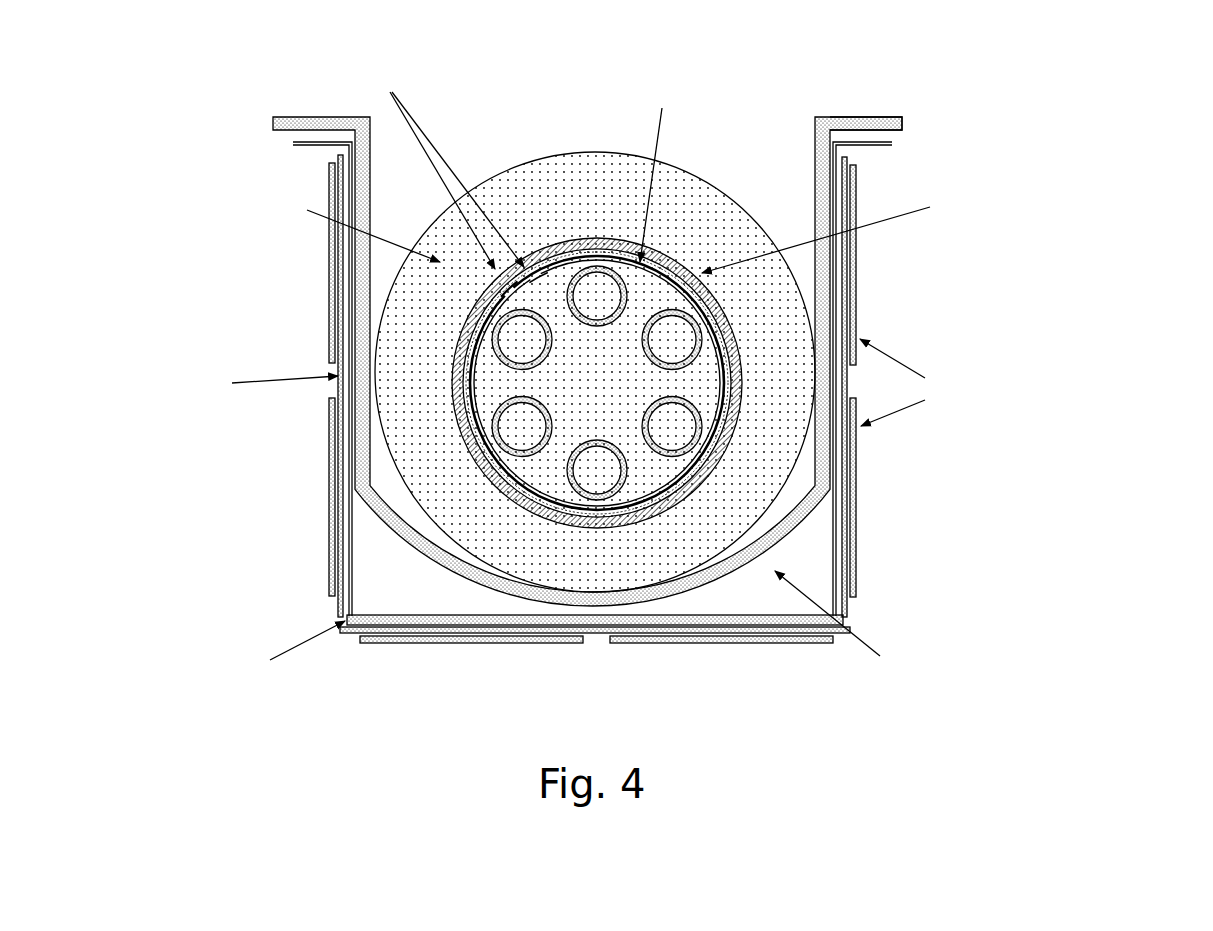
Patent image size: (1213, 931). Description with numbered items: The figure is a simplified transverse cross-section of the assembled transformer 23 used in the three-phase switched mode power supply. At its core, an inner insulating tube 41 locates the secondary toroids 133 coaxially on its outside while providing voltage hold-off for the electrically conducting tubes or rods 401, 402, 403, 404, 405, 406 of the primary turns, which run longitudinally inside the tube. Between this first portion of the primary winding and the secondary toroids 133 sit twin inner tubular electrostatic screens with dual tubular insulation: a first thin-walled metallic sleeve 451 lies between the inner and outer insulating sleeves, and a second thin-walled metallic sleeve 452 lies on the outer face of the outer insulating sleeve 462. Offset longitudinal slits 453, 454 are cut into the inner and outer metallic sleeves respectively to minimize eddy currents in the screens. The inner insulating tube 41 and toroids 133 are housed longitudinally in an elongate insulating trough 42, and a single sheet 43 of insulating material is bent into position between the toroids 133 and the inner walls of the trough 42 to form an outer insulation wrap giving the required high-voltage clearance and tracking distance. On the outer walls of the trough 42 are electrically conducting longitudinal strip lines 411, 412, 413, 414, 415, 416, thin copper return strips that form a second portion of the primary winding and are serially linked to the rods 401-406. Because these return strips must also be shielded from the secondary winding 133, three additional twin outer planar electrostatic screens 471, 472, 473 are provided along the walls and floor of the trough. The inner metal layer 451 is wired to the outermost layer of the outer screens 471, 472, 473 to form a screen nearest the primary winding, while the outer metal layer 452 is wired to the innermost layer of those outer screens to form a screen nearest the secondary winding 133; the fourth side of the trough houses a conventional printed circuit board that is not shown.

The transformer 23 is at (230, 574).
The secondary toroids 133 is at (530, 190).
The inner insulating tube 41 is at (742, 375).
The electrically conducting tube or rod 401 is at (701, 343).
The electrically conducting tube or rod 402 is at (702, 423).
The electrically conducting tube or rod 403 is at (566, 470).
The electrically conducting tube or rod 404 is at (491, 421).
The electrically conducting tube or rod 405 is at (494, 352).
The electrically conducting tube or rod 406 is at (630, 292).
The first electrostatic screen 451 is at (648, 492).
The second electrostatic screen 452 is at (633, 503).
The longitudinal slit 453 is at (536, 272).
The longitudinal slit 454 is at (507, 290).
The outer insulating sleeve 462 is at (683, 478).
The twin outer planar electrostatic screen 471 is at (830, 590).
The twin outer planar electrostatic screen 472 is at (805, 617).
The twin outer planar electrostatic screen 473 is at (355, 582).
The longitudinal strip line 411 is at (856, 283).
The longitudinal strip line 412 is at (856, 500).
The longitudinal strip line 413 is at (730, 645).
The longitudinal strip line 414 is at (474, 645).
The longitudinal strip line 415 is at (333, 512).
The longitudinal strip line 416 is at (330, 285).
The elongate insulating trough 42 is at (887, 145).
The single sheet of insulating material 43 is at (903, 123).